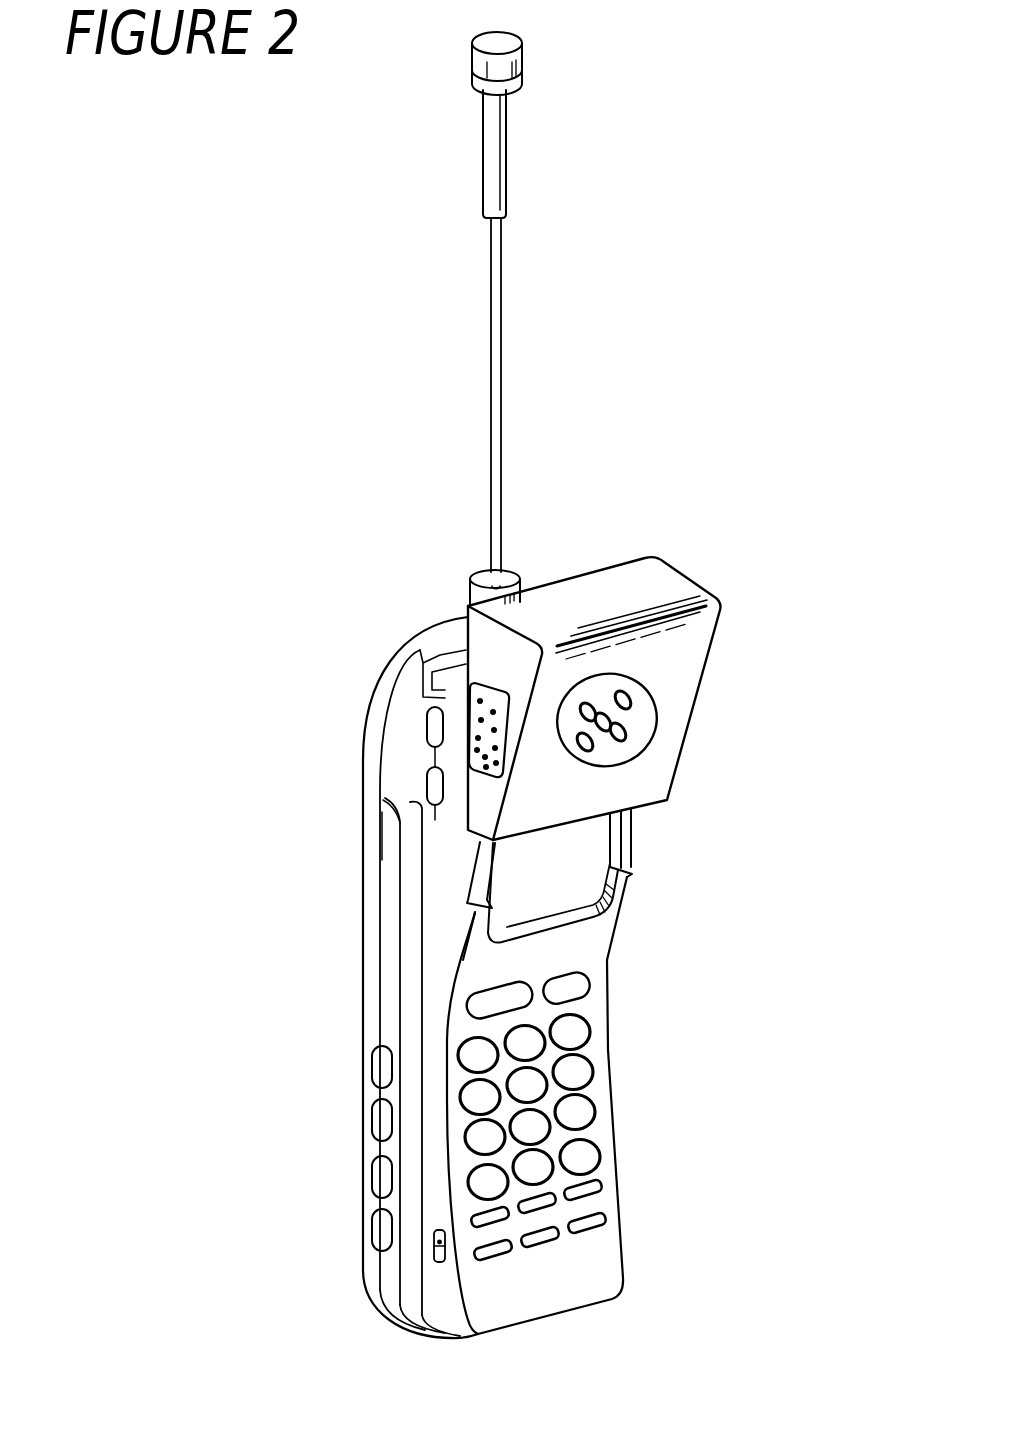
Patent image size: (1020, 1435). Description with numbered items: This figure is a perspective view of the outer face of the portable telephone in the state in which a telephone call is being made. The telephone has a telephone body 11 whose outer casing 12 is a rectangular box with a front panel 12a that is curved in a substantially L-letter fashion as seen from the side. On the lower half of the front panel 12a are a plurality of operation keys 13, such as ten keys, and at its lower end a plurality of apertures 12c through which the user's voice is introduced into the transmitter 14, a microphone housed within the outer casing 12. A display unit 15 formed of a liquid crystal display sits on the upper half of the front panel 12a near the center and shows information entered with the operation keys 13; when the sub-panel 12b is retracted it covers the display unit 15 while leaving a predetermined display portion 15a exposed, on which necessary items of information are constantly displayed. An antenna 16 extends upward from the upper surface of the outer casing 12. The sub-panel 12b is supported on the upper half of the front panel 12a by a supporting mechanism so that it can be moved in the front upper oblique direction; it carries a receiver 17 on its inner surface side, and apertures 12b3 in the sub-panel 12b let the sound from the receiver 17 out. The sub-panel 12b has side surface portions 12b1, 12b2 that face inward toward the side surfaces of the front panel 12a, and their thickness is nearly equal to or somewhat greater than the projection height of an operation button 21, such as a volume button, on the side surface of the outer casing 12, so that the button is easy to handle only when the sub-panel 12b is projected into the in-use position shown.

The telephone body 11 is at (352, 824).
The outer casing 12 is at (390, 975).
The front panel 12a is at (595, 948).
The sub-panel 12b is at (693, 652).
The side surface portion 12b1 is at (488, 650).
The side surface portion 12b2 is at (717, 612).
The apertures 12b3 is at (630, 733).
The apertures 12c is at (597, 1217).
The operation keys 13 is at (587, 1083).
The transmitter 14 is at (597, 1270).
The display unit 15 is at (585, 846).
The display portion 15a is at (573, 883).
The antenna 16 is at (505, 183).
The receiver 17 is at (678, 683).
The operation button 21 is at (428, 723).